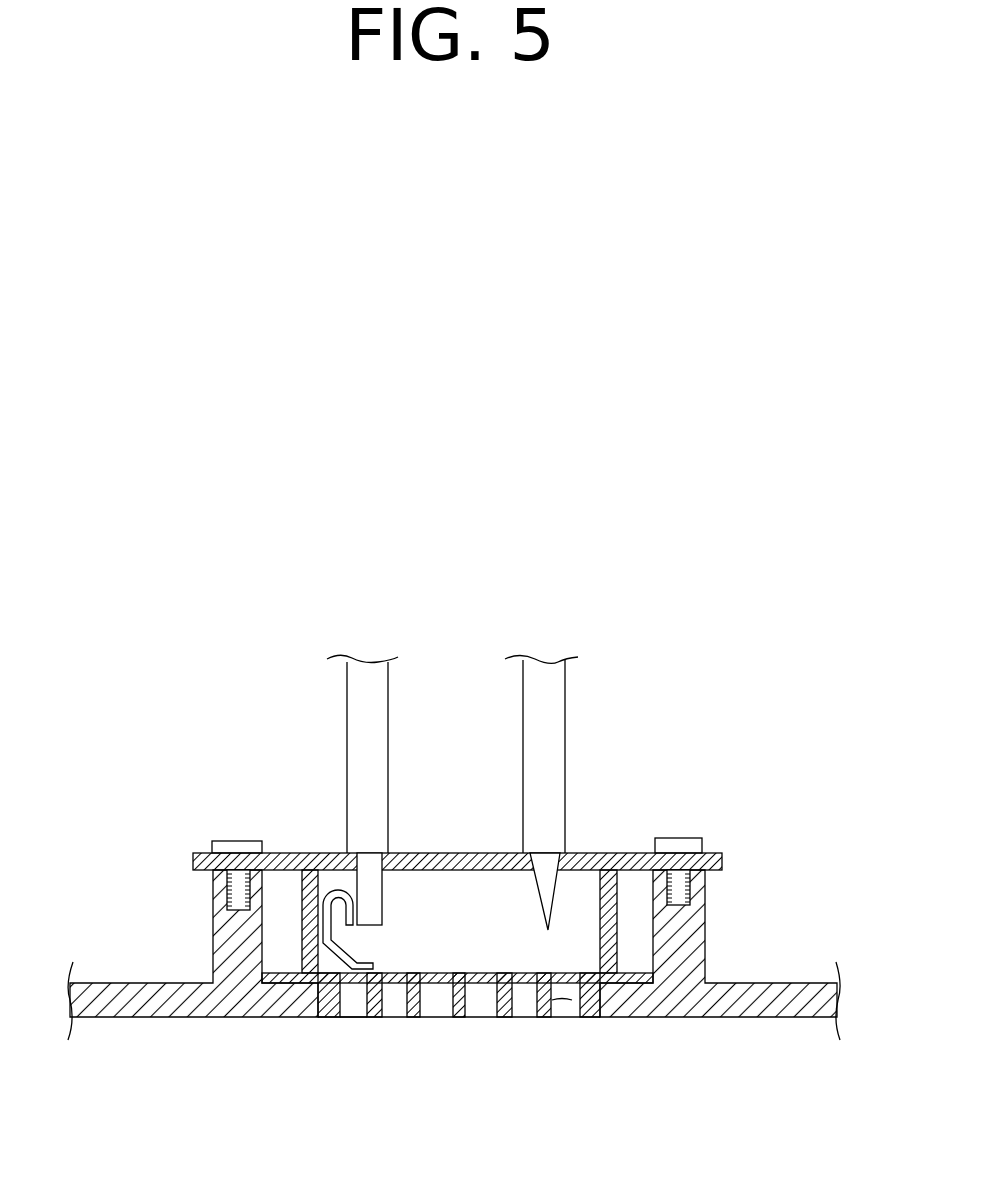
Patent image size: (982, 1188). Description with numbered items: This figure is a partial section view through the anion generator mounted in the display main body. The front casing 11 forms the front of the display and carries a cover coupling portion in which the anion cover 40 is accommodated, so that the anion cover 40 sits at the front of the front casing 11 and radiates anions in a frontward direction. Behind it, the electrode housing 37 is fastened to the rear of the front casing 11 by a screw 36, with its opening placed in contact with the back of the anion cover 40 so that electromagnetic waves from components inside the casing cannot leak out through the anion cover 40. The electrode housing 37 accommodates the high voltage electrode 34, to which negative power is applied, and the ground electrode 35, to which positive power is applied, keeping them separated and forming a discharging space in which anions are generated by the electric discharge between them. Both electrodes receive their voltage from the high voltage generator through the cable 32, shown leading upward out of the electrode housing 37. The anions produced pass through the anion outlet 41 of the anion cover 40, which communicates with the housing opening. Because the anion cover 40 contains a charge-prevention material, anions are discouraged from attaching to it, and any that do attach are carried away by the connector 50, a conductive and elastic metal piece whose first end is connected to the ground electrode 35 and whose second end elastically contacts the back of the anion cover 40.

The front casing 11 is at (790, 1017).
The cable 32 is at (507, 658).
The high voltage electrode 34 is at (548, 930).
The ground electrode 35 is at (385, 928).
The screw 36 is at (680, 838).
The electrode housing 37 is at (587, 853).
The anion cover 40 is at (593, 1017).
The anion outlet 41 is at (568, 1000).
The connector 50 is at (358, 1017).